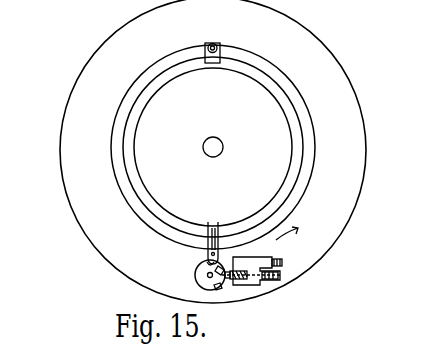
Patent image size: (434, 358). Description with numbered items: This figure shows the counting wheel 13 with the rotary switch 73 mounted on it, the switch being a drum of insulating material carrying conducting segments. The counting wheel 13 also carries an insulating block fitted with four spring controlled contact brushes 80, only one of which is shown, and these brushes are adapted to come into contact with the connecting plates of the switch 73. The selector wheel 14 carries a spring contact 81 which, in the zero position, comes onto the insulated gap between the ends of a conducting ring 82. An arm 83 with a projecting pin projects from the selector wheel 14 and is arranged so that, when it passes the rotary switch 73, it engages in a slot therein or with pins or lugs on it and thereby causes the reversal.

The counting wheel 13 is at (360, 105).
The selector wheel 14 is at (284, 116).
The conducting ring 82 is at (113, 158).
The spring contact 81 is at (216, 44).
The arm with projecting pin 83 is at (218, 223).
The rotary switch 73 is at (195, 273).
The spring controlled contact brushes 80 is at (232, 280).